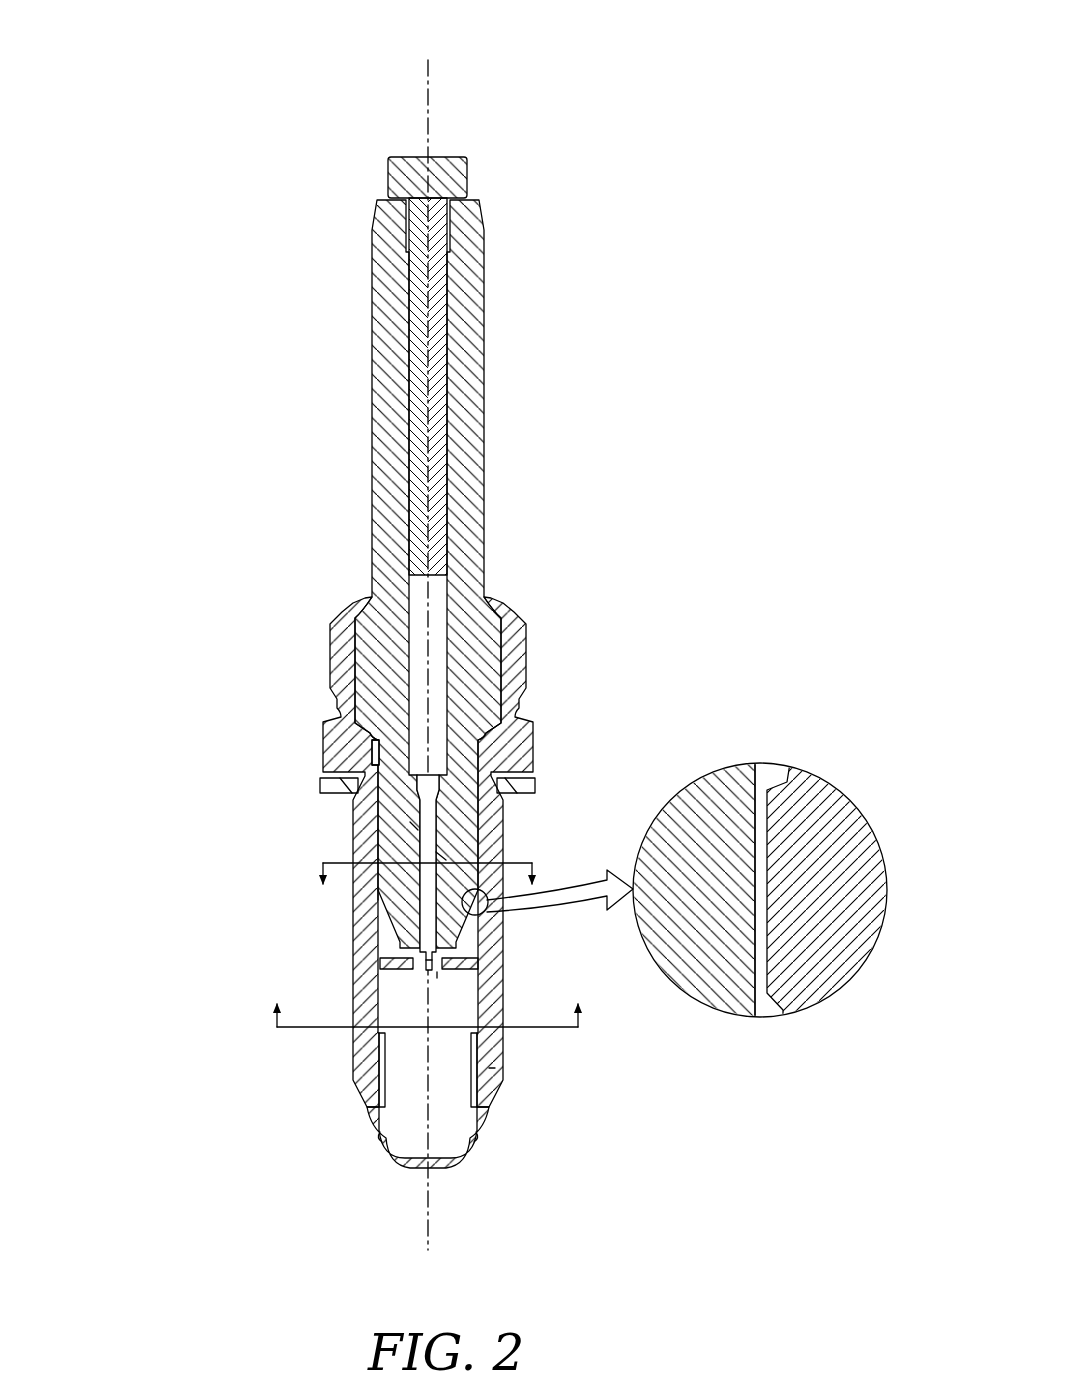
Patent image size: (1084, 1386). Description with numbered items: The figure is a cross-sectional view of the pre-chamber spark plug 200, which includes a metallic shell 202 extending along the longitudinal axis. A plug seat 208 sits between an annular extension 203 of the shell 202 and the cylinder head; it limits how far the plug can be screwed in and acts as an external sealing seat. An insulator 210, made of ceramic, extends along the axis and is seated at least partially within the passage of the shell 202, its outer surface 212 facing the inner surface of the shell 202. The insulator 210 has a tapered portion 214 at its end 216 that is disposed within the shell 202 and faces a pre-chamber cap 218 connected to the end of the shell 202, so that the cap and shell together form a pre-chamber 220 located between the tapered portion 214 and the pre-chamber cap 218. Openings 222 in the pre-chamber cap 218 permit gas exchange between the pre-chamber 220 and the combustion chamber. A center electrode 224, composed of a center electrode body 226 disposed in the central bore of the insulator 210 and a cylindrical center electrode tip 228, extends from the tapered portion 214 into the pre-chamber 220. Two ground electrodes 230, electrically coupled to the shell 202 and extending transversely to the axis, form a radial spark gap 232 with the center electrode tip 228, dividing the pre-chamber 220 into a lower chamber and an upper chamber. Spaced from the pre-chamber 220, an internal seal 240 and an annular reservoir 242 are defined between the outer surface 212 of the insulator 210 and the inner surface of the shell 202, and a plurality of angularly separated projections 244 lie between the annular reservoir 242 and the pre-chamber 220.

The pre-chamber spark plug 200 is at (198, 54).
The shell 202 is at (489, 1068).
The annular extension 203 is at (318, 772).
The plug seat 208 is at (520, 785).
The insulator 210 is at (468, 326).
The outer surface 212 is at (757, 912).
The tapered portion 214 is at (478, 946).
The end 216 is at (466, 935).
The pre-chamber cap 218 is at (468, 1165).
The pre-chamber 220 is at (455, 1045).
The openings 222 is at (383, 1143).
The center electrode 224 is at (418, 828).
The center electrode body 226 is at (434, 857).
The center electrode tip 228 is at (427, 968).
The ground electrode 230 is at (467, 963).
The spark gap 232 is at (437, 976).
The internal seal 240 is at (370, 752).
The annular reservoir 242 is at (343, 765).
The projections 244 is at (378, 900).